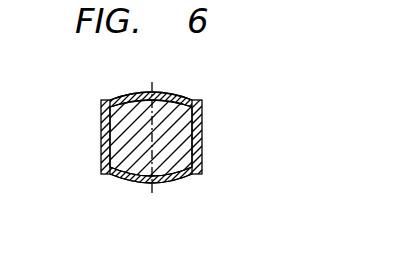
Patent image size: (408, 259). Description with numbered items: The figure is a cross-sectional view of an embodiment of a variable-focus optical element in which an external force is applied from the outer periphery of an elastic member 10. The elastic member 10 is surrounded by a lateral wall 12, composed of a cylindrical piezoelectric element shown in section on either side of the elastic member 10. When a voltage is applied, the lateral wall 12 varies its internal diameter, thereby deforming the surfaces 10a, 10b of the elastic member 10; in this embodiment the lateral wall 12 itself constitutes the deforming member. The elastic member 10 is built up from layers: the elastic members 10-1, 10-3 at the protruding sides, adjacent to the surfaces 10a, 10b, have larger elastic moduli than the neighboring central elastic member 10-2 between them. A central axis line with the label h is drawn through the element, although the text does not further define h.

The elastic member 10 is at (163, 139).
The elastic member at protruding side 10-1 is at (204, 99).
The neighboring elastic member 10-2 is at (190, 138).
The elastic member at protruding side 10-3 is at (196, 178).
The surface 10a is at (160, 93).
The surface 10b is at (170, 183).
The lateral wall 12 is at (105, 140).
The central optical axis / height h is at (153, 152).